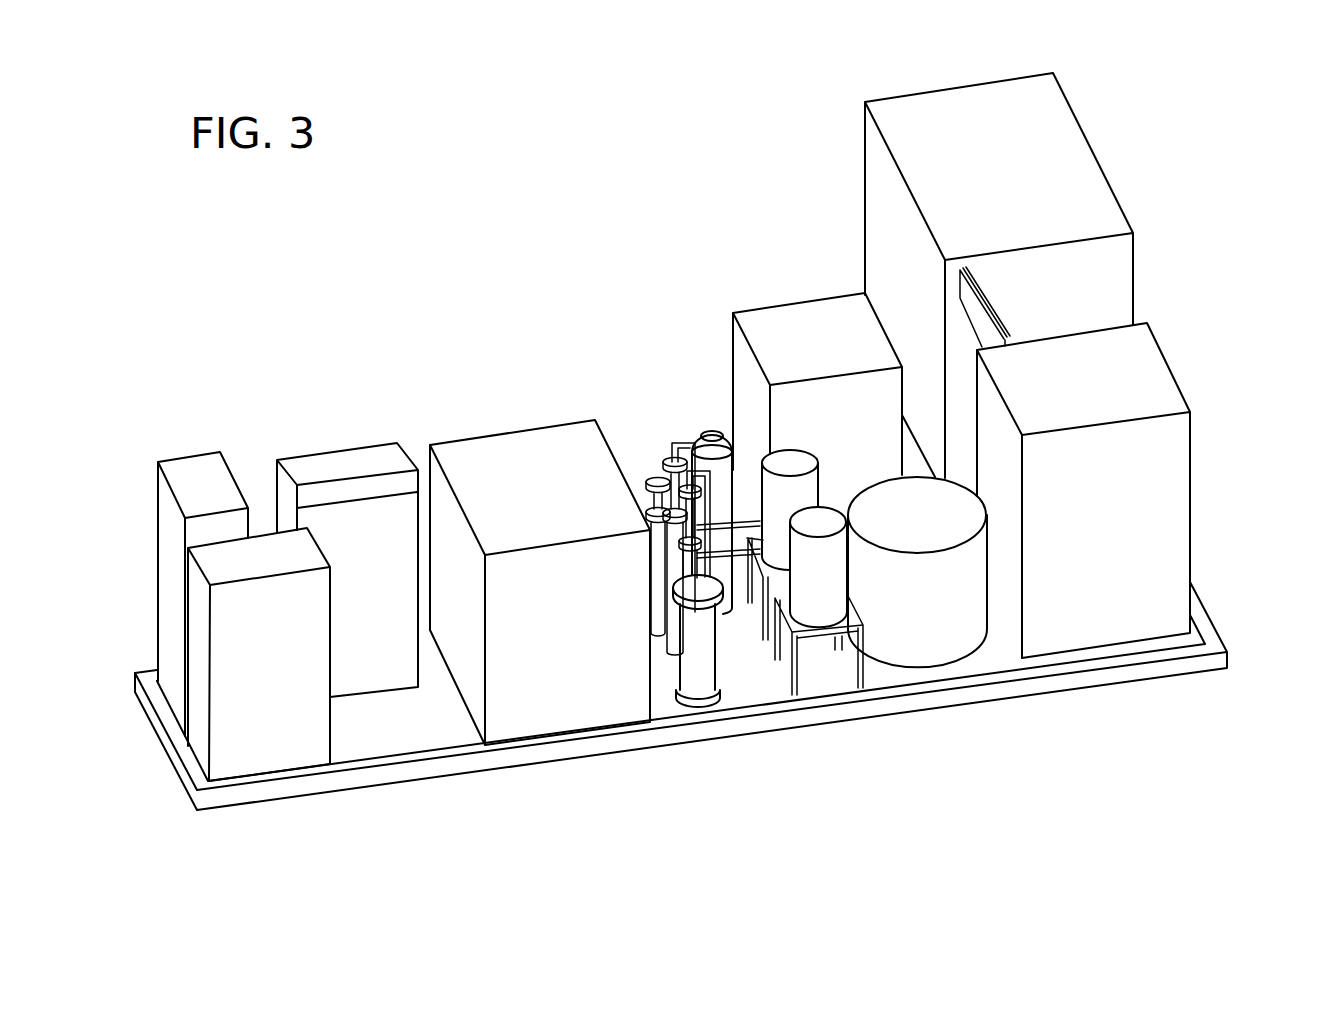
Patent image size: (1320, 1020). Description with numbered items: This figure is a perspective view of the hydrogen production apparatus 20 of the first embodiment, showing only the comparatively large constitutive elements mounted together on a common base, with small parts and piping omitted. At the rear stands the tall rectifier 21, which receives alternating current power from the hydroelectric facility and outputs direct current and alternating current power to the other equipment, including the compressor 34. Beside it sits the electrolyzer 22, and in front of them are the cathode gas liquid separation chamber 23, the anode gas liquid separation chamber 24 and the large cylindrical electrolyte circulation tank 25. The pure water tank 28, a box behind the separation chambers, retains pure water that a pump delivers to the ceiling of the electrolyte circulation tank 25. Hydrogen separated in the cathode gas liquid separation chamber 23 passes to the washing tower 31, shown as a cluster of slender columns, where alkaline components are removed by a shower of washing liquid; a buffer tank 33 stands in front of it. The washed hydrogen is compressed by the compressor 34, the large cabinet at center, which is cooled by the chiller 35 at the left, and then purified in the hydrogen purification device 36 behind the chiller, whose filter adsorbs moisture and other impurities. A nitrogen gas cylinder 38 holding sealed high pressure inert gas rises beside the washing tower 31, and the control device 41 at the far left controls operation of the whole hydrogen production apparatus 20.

The hydrogen production apparatus 20 is at (1211, 86).
The rectifier 21 is at (990, 117).
The electrolyzer 22 is at (1113, 588).
The cathode gas liquid separation chamber 23 is at (778, 462).
The anode gas liquid separation chamber 24 is at (820, 588).
The electrolyte circulation tank 25 is at (943, 602).
The pure water tank 28 is at (813, 342).
The washing tower 31 is at (698, 553).
The buffer tank 33 is at (700, 683).
The compressor 34 is at (538, 705).
The chiller 35 is at (270, 742).
The hydrogen purification device 36 is at (350, 463).
The nitrogen gas cylinder 38 is at (710, 432).
The control device 41 is at (200, 468).